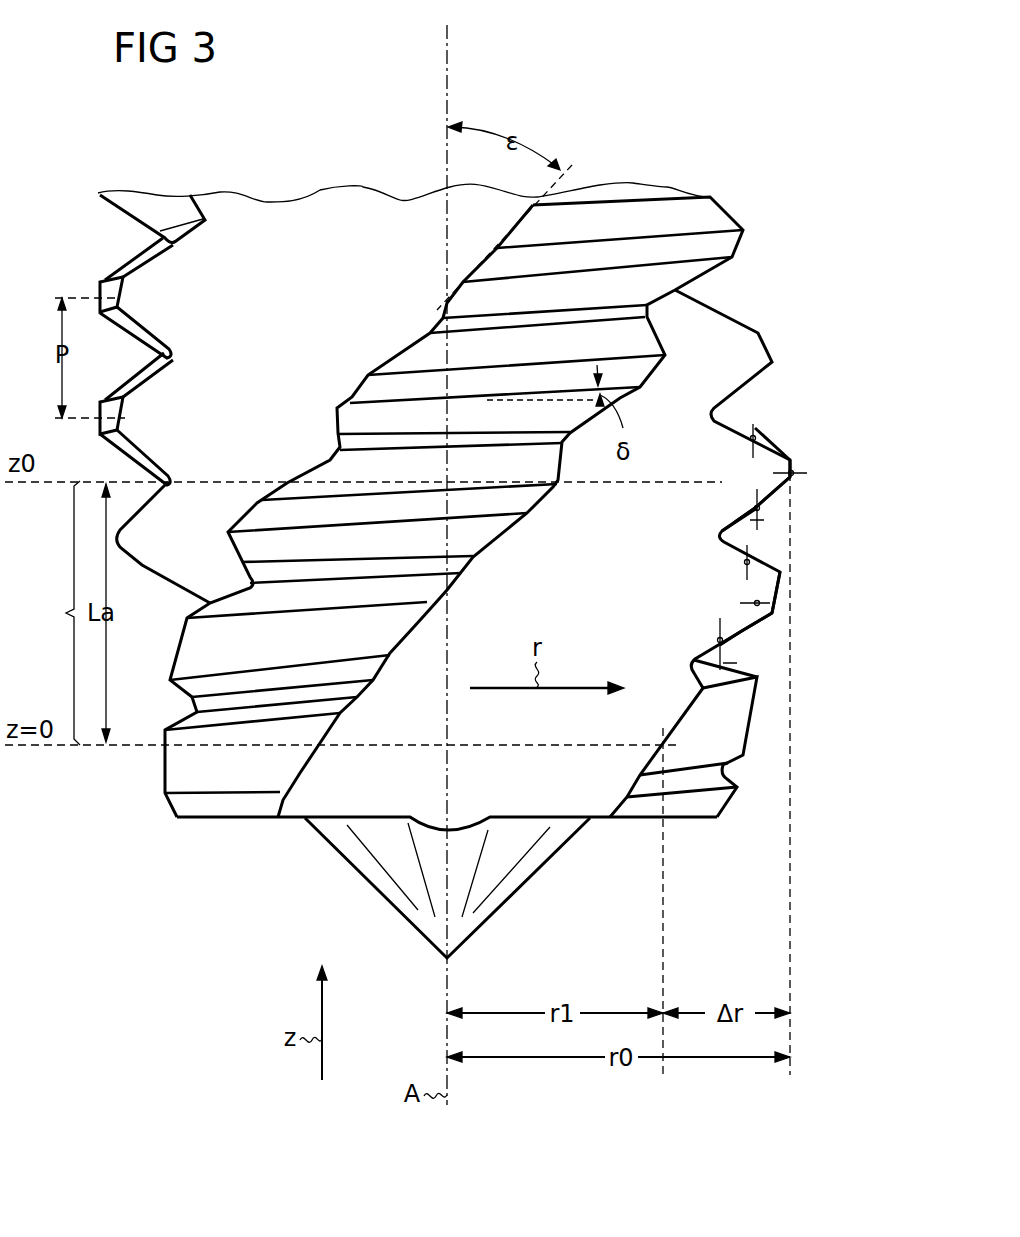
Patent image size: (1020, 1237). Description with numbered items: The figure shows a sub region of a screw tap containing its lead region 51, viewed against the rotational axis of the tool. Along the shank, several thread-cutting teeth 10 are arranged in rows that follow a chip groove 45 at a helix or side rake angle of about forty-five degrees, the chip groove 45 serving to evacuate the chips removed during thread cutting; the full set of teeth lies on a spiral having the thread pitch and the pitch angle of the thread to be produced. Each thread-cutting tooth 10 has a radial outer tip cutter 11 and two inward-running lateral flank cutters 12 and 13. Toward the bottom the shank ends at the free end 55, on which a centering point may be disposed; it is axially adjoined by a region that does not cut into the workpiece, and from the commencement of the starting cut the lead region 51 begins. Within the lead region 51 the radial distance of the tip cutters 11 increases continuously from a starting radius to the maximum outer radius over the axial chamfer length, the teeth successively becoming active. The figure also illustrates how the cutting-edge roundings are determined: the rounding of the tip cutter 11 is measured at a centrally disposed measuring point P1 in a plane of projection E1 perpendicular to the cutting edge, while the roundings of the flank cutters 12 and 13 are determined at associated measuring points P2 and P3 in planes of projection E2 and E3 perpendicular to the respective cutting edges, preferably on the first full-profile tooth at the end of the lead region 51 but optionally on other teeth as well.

The thread-cutting tooth 10 is at (357, 400).
The tip cutter 11 is at (792, 487).
The flank cutter 12 is at (790, 495).
The flank cutter 13 is at (757, 465).
The chip groove 45 is at (291, 252).
The lead region 51 is at (55, 613).
The free end 55 is at (447, 957).
The plane of projection E1 is at (775, 475).
The plane of projection E2 is at (759, 522).
The plane of projection E3 is at (755, 428).
The measuring point P1 is at (792, 473).
The measuring point P2 is at (755, 508).
The measuring point P3 is at (757, 438).